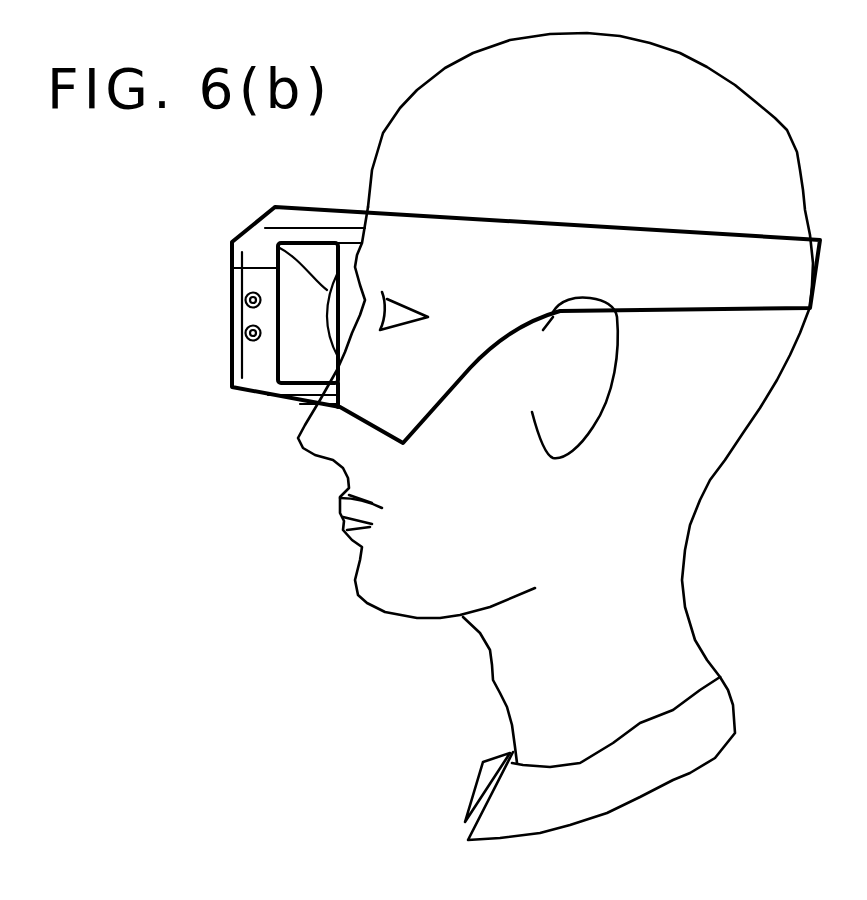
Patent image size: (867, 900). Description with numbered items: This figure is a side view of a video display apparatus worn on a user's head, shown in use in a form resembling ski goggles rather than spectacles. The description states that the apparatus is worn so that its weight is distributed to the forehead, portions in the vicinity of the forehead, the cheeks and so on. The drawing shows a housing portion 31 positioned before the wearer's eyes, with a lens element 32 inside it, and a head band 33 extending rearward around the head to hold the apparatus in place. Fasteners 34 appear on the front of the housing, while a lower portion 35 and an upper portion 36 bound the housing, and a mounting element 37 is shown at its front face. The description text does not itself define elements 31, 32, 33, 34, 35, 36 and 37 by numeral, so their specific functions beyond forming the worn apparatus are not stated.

The housing 31 is at (273, 357).
The lens 32 is at (278, 247).
The head band 33 is at (512, 220).
The screws 34 is at (246, 296).
The lower cover 35 is at (294, 396).
The upper cover 36 is at (313, 228).
The mounting frame 37 is at (234, 354).